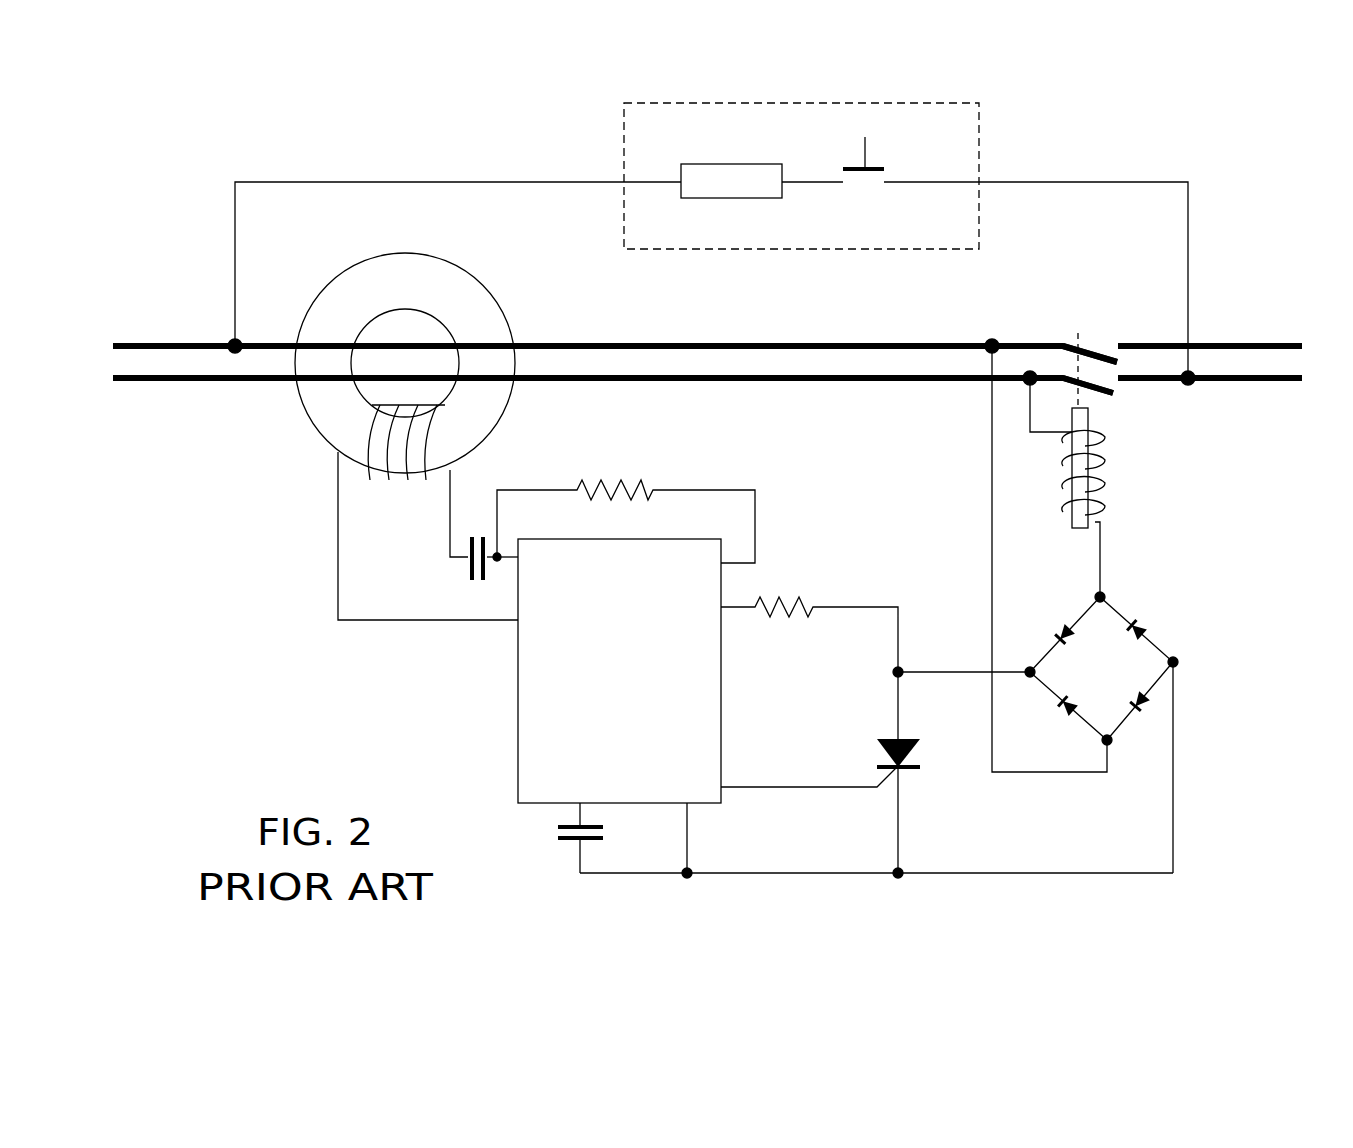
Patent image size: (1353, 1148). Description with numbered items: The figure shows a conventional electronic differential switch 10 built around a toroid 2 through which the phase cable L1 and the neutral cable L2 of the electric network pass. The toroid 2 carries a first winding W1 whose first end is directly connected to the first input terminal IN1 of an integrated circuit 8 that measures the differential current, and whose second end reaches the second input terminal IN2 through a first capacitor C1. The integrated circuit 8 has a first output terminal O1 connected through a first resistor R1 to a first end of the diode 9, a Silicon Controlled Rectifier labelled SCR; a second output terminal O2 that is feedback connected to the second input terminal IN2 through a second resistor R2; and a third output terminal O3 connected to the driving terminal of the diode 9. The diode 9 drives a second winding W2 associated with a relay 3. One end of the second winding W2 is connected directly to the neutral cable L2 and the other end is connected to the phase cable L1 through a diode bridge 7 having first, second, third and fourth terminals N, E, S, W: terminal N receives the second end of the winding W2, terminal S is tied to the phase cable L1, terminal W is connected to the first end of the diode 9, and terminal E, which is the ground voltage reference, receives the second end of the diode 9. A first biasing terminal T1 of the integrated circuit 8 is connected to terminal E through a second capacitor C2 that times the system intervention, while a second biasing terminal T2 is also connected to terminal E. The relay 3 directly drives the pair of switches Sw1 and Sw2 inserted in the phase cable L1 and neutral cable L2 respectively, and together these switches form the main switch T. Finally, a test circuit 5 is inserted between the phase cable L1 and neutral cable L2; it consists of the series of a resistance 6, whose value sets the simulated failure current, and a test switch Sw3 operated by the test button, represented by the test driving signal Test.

The toroid 2 is at (362, 295).
The relay 3 is at (1111, 487).
The test circuit 5 is at (833, 165).
The resistance 6 is at (717, 182).
The diode bridge 7 is at (1132, 668).
The integrated circuit 8 is at (570, 682).
The diode SCR 9 is at (857, 802).
The electronic differential switch 10 is at (1108, 167).
The phase cable L1 is at (708, 335).
The neutral cable L2 is at (708, 395).
The main switch T is at (1073, 315).
The switch Sw1 is at (1102, 337).
The switch Sw2 is at (1074, 396).
The test switch Sw3 is at (866, 178).
The test driving signal Test is at (898, 117).
The first winding W1 is at (428, 512).
The second winding W2 is at (1061, 487).
The first capacitor C1 is at (475, 566).
The second capacitor C2 is at (560, 838).
The first resistor R1 is at (809, 615).
The second resistor R2 is at (626, 504).
The first input terminal IN1 is at (512, 619).
The second input terminal IN2 is at (518, 558).
The first output terminal O1 is at (721, 610).
The second output terminal O2 is at (722, 563).
The third output terminal O3 is at (721, 788).
The first biasing terminal T1 is at (573, 807).
The second biasing terminal T2 is at (687, 805).
The Silicon Controlled Rectifier SCR is at (820, 772).
The first terminal N is at (1102, 588).
The second terminal E is at (1177, 655).
The third terminal S is at (1115, 737).
The fourth terminal W is at (1025, 657).